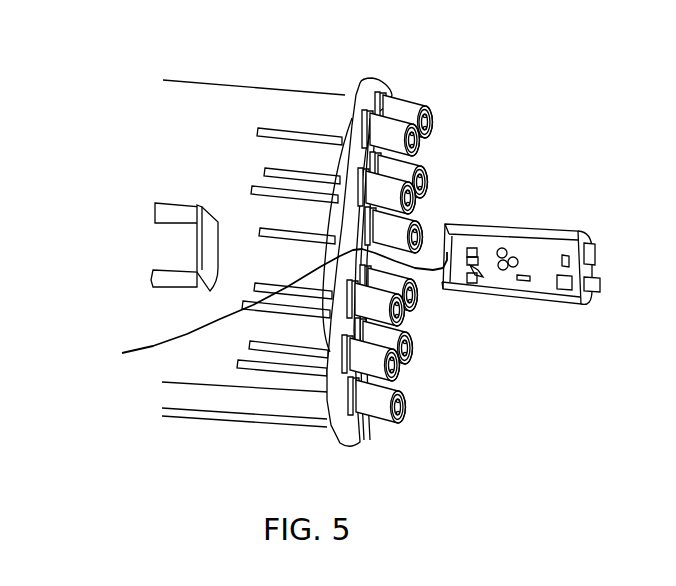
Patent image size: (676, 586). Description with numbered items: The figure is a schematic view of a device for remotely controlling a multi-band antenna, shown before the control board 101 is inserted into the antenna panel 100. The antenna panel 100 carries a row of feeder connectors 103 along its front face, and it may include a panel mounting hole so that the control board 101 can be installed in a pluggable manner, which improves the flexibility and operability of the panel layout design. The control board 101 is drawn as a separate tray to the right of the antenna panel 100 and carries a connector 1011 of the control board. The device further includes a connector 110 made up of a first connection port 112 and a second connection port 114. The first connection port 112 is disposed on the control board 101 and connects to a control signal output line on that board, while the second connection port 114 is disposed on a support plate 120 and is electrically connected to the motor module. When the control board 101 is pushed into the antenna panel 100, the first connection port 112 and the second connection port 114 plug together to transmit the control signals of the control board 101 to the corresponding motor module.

The antenna panel 100 is at (371, 82).
The feeder connector 103 is at (424, 142).
The control board 101 is at (549, 222).
The connector of the control board 1011 is at (459, 259).
The support plate 120 is at (195, 222).
The connector 110 is at (64, 288).
The second connection port 114 is at (218, 248).
The first connection port 112 is at (262, 307).